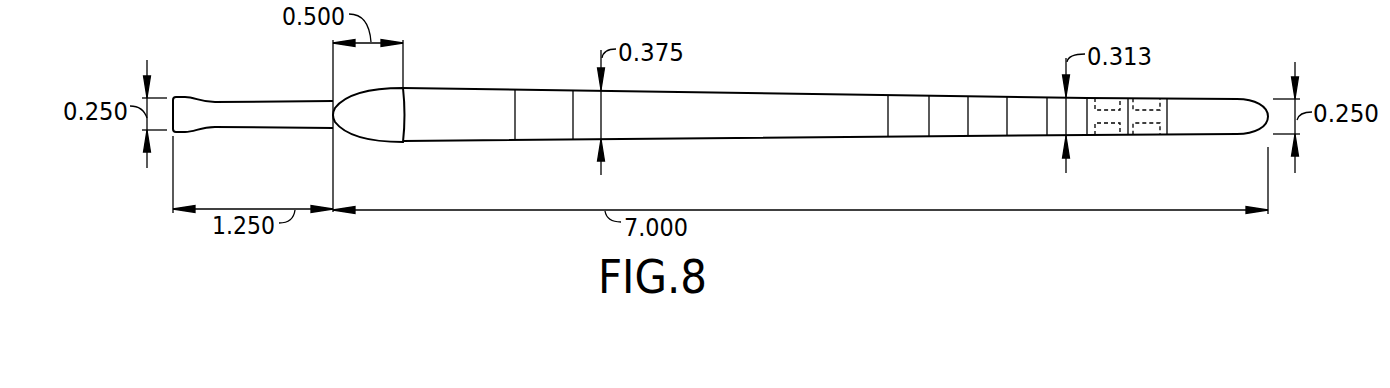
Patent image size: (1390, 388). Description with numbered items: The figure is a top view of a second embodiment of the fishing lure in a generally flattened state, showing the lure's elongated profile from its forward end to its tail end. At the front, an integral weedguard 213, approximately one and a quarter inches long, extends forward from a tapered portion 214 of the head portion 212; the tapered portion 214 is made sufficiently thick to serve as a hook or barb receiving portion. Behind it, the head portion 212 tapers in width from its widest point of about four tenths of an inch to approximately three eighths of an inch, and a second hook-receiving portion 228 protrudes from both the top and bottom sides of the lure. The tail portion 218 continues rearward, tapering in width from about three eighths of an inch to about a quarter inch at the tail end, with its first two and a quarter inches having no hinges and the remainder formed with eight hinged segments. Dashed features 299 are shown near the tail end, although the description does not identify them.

The head portion 212 is at (437, 91).
The weedguard 213 is at (282, 99).
The tapered portion 214 is at (371, 141).
The tail portion 218 is at (785, 94).
The second hook-receiving portion 228 is at (548, 82).
The hidden recess features 299 is at (1108, 104).